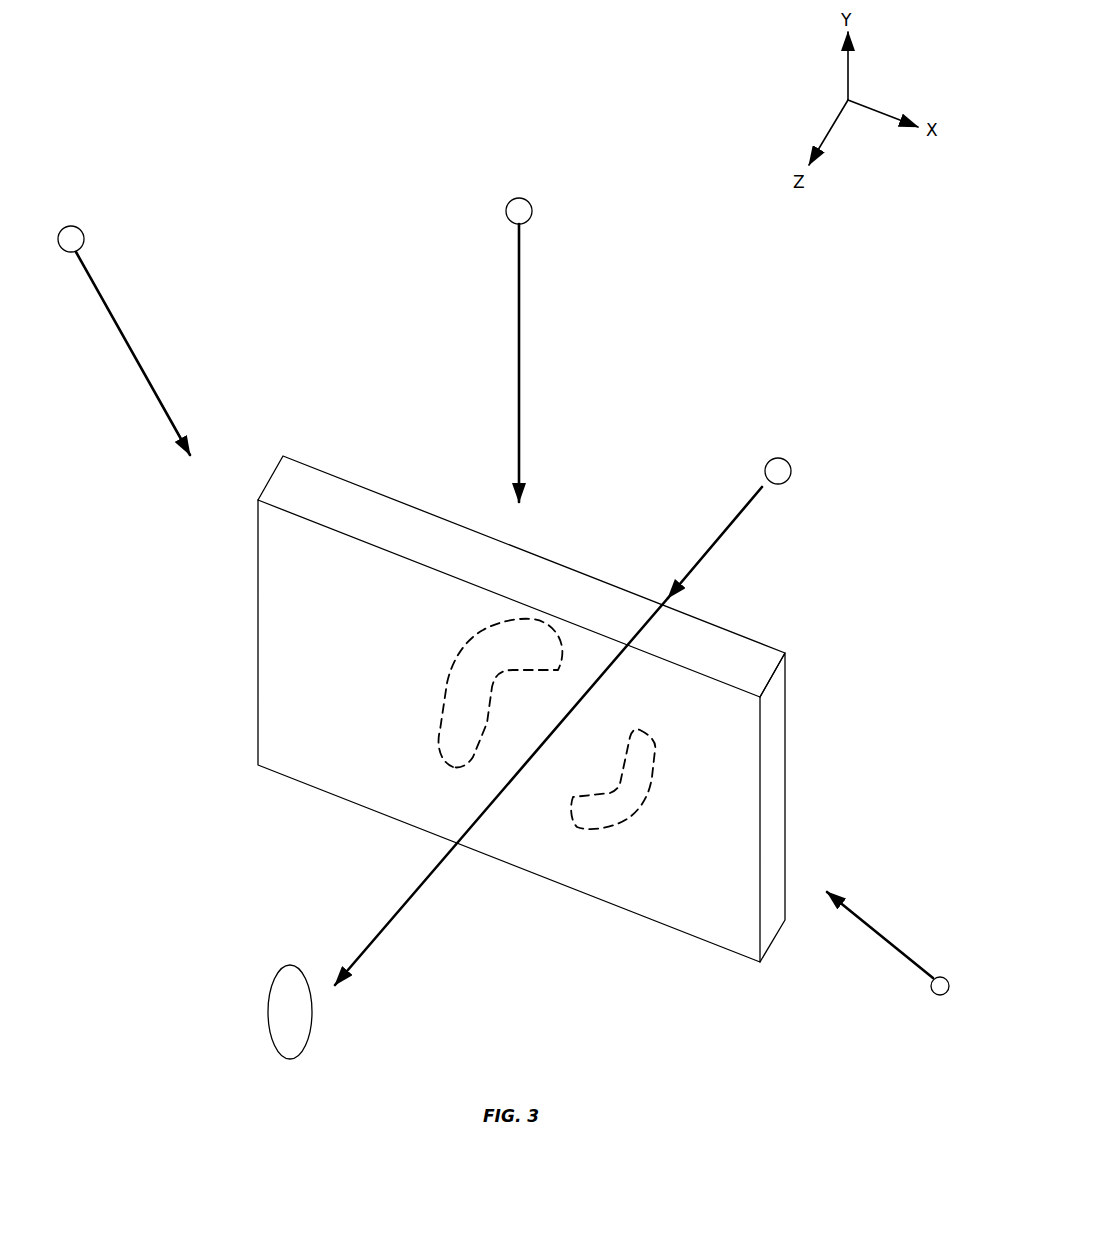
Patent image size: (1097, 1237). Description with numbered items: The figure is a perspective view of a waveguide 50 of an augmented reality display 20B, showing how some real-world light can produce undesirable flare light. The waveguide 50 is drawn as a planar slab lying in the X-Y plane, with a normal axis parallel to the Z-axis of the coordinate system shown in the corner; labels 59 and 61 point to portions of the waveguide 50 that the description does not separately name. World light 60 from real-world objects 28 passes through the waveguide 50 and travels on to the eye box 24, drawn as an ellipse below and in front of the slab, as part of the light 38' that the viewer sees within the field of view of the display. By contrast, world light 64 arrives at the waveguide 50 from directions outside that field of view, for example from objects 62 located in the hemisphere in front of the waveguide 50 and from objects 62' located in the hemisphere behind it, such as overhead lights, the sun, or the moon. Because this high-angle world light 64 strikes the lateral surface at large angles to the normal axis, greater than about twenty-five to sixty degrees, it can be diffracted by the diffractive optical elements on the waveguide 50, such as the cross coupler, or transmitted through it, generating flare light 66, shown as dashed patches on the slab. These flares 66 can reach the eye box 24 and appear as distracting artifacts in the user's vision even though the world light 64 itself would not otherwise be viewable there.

The electronic device 20B is at (550, 638).
The eye box 24 is at (311, 1028).
The real-world objects 28 is at (791, 471).
The light 38' is at (501, 791).
The waveguide 50 is at (550, 711).
The front surface of display 59 is at (697, 920).
The world light 60 is at (727, 530).
The top surface of display 61 is at (777, 628).
The objects 62 is at (740, 596).
The objects 62' is at (103, 240).
The flare-inducing world light 64 is at (120, 327).
The flare light 66 is at (545, 622).